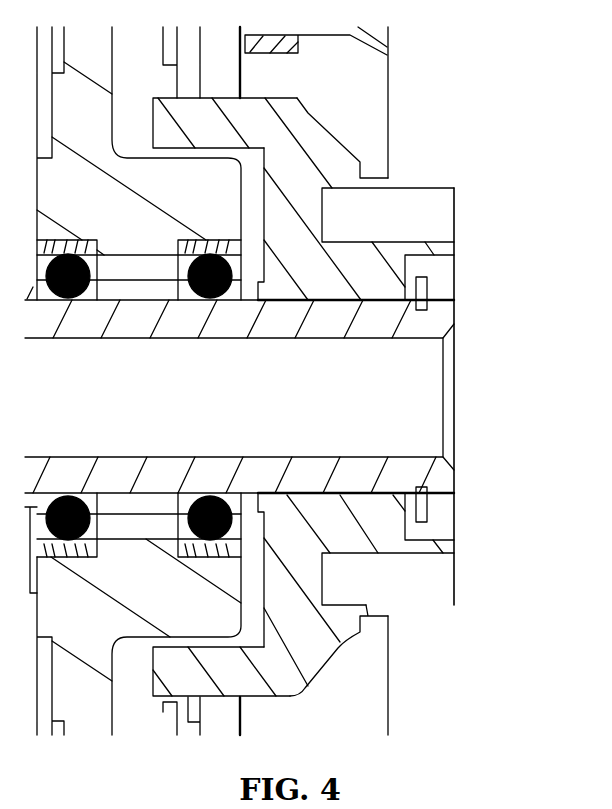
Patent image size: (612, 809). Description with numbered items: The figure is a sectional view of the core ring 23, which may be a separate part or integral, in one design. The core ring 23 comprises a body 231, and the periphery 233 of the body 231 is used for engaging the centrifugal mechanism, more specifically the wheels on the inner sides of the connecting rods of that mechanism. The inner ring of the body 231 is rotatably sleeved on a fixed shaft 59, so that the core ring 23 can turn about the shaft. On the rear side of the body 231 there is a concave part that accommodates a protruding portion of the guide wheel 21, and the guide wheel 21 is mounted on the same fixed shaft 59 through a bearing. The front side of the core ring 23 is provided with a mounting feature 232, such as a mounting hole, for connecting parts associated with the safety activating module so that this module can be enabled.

The guide wheel 21 is at (118, 215).
The core ring 23 is at (322, 168).
The body 231 is at (207, 120).
The mounting feature 232 is at (418, 213).
The periphery 233 is at (255, 693).
The fixed shaft 59 is at (280, 323).